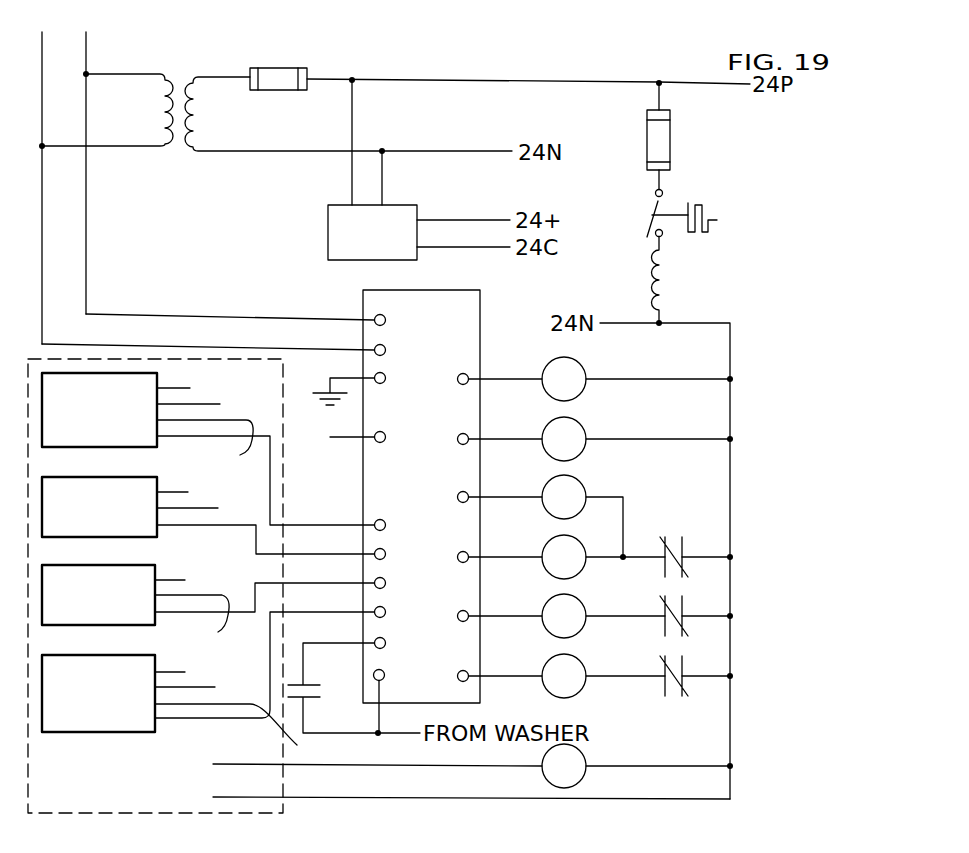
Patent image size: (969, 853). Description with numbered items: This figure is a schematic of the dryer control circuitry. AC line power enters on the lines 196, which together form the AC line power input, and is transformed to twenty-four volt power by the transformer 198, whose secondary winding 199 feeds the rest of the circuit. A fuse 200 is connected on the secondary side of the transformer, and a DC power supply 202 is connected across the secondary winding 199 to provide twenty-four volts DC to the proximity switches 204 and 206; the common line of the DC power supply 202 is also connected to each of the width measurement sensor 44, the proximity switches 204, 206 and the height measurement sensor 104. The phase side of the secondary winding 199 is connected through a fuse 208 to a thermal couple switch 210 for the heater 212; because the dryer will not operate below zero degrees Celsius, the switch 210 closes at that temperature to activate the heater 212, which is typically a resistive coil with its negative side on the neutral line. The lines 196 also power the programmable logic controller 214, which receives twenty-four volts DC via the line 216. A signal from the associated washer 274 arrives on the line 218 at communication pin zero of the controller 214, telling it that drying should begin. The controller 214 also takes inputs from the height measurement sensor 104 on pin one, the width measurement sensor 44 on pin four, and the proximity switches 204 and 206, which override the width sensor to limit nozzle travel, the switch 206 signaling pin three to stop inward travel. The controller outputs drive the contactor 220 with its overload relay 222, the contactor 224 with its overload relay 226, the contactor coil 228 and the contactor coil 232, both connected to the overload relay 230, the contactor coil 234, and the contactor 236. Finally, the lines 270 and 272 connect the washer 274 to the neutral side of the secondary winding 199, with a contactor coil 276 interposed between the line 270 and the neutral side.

The AC line power input lines 196 is at (42, 53).
The transformer 198 is at (277, 152).
The secondary winding 199 is at (207, 131).
The fuse 200 is at (285, 76).
The DC power supply 202 is at (340, 237).
The fuse 208 is at (655, 146).
The thermal couple switch 210 is at (650, 212).
The heater 212 is at (664, 297).
The programmable logic controller 214 is at (438, 333).
The line 216 is at (350, 438).
The line 218 is at (390, 736).
The contactor 220 is at (592, 688).
The overload relay 222 is at (673, 705).
The contactor 224 is at (548, 641).
The overload relay 226 is at (661, 631).
The contactor coil 228 is at (548, 575).
The overload relay 230 is at (661, 567).
The contactor coil 232 is at (589, 486).
The contactor coil 234 is at (587, 427).
The contactor 236 is at (592, 370).
The line 270 is at (248, 764).
The line 272 is at (228, 797).
The washer 274 is at (177, 800).
The contactor coil 276 is at (580, 763).
The width measurement sensor 44 is at (113, 427).
The proximity switch 204 is at (121, 521).
The proximity switch 206 is at (106, 609).
The vehicular height measurement sensor 104 is at (111, 709).